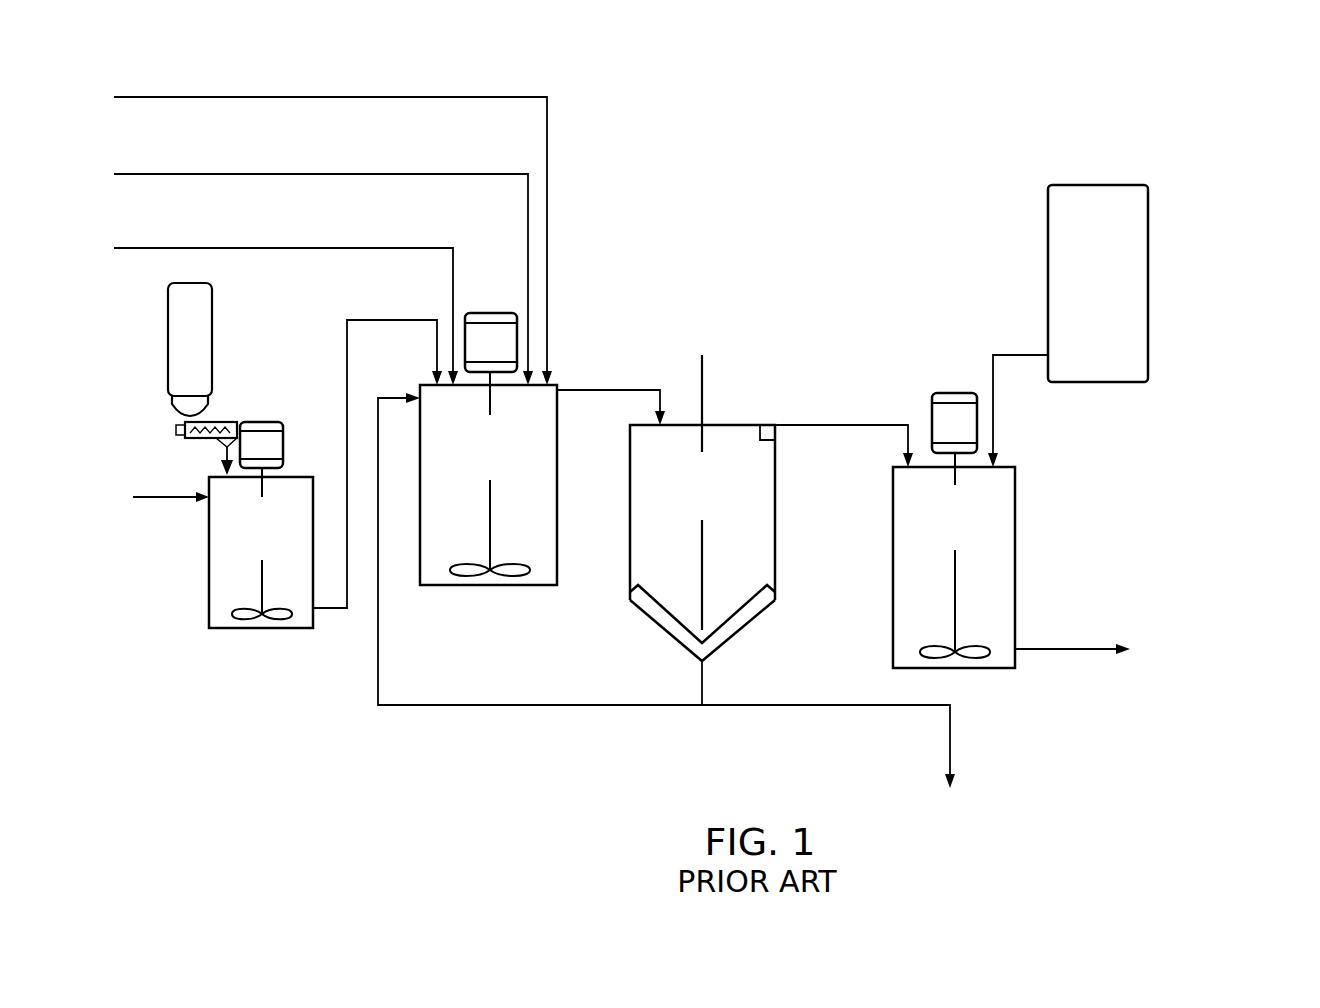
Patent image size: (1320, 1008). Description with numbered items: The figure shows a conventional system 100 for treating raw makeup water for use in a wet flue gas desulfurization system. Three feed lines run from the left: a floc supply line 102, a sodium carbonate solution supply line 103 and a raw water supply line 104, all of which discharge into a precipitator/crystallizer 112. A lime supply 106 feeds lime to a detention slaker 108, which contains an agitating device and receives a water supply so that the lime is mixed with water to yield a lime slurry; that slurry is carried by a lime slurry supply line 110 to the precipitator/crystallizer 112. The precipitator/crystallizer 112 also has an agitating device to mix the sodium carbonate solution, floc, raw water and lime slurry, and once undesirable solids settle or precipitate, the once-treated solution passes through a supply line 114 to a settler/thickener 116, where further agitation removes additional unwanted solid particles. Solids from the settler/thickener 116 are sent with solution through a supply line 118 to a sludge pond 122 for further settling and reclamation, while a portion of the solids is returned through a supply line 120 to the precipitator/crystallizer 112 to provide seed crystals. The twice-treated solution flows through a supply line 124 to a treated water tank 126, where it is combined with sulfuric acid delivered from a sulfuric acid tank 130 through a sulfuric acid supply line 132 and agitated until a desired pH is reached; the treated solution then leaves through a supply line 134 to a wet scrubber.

The conventional system 100 is at (645, 84).
The floc supply line 102 is at (478, 97).
The sodium carbonate solution supply line 103 is at (440, 248).
The raw water supply line 104 is at (497, 174).
The lime supply 106 is at (213, 370).
The detention slaker 108 is at (208, 553).
The lime slurry supply line 110 is at (437, 320).
The precipitator/crystallizer 112 is at (420, 567).
The supply line 114 is at (622, 390).
The settler/thickener 116 is at (777, 577).
The supply line 118 is at (700, 685).
The supply line 120 is at (578, 705).
The sludge pond 122 is at (950, 752).
The supply line 124 is at (860, 420).
The treated water tank 126 is at (1015, 505).
The sulfuric acid tank 130 is at (1058, 185).
The sulfuric acid supply line 132 is at (995, 392).
The supply line 134 is at (1085, 652).